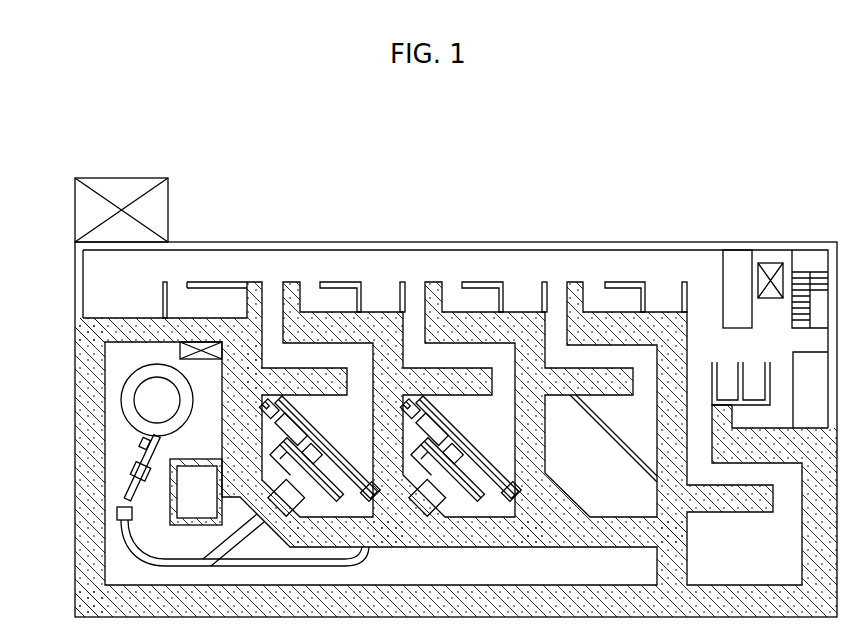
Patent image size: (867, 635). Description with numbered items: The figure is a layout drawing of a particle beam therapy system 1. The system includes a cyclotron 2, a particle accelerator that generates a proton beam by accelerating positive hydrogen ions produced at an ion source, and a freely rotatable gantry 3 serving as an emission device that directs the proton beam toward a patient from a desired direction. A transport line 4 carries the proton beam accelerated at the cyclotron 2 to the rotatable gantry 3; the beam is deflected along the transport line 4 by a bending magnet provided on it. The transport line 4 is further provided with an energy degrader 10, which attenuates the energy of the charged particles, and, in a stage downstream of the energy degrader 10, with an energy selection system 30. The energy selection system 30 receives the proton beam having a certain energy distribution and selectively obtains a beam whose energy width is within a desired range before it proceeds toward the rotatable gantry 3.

The particle beam therapy system 1 is at (50, 161).
The cyclotron 2 is at (133, 381).
The rotatable gantry 3 is at (333, 434).
The transport line 4 is at (125, 538).
The energy degrader 10 is at (133, 473).
The energy selection system 30 is at (117, 513).